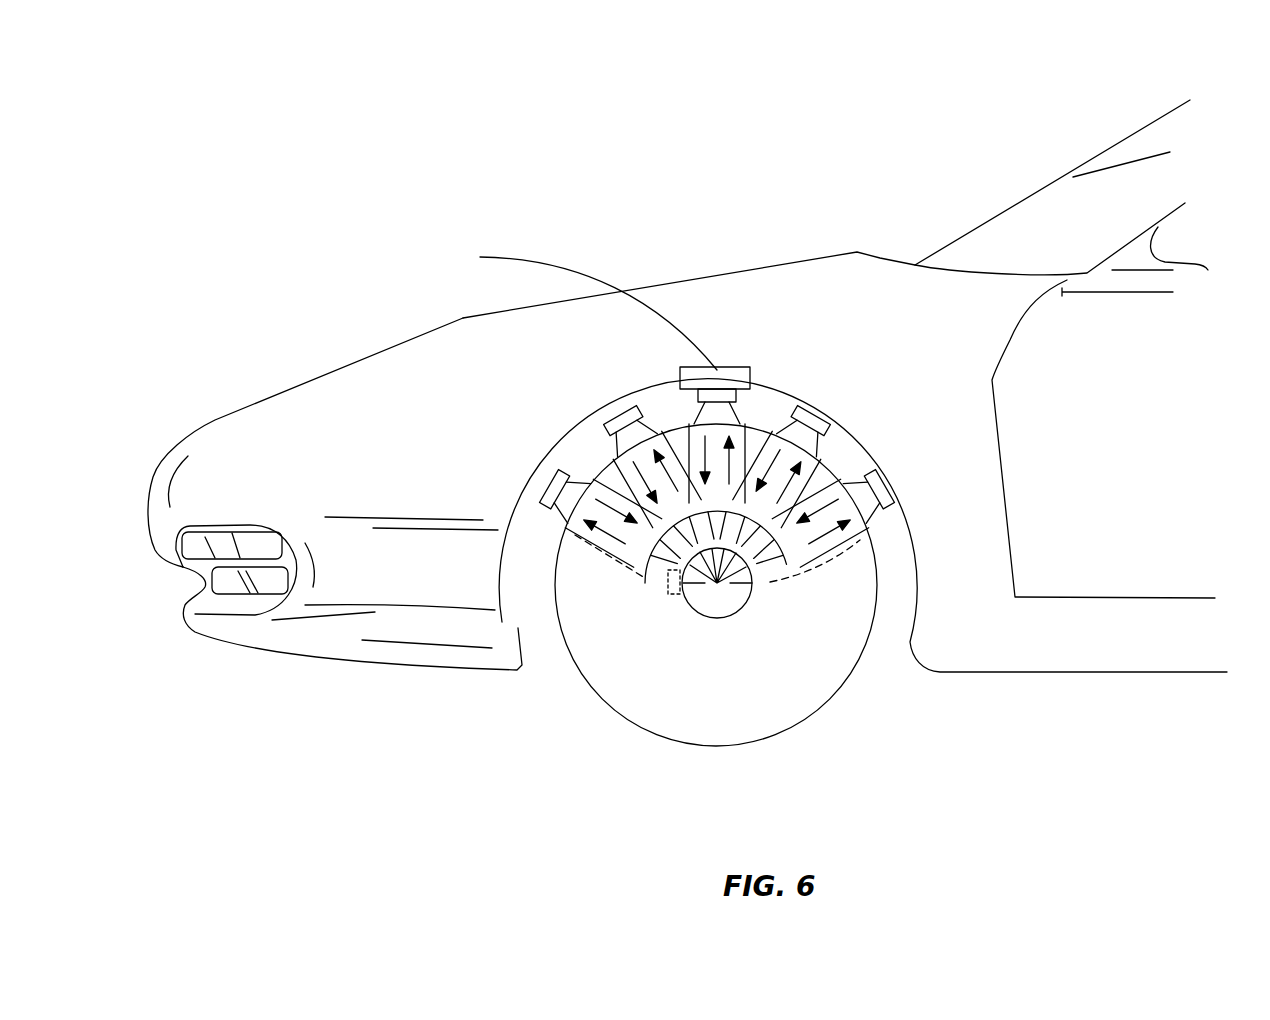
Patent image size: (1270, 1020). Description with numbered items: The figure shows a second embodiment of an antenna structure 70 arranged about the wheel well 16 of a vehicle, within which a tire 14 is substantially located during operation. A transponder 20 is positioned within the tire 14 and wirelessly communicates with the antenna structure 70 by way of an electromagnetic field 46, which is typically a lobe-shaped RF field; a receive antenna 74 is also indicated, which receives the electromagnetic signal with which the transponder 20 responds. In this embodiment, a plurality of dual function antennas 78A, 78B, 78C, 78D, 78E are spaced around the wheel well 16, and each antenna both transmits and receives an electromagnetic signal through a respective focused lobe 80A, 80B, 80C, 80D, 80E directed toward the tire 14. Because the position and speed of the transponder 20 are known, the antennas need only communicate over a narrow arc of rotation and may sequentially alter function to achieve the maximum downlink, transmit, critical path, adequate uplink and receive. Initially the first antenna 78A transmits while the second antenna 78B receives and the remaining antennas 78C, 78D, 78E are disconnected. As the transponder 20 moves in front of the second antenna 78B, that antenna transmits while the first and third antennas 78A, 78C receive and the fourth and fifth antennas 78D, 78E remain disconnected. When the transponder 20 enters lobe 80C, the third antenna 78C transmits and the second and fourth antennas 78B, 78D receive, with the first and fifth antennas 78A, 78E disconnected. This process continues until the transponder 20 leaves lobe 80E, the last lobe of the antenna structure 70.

The tire 14 is at (798, 732).
The wheel well 16 is at (866, 455).
The transponder 20 is at (675, 597).
The electromagnetic field 46 is at (797, 603).
The antenna structure 70 is at (759, 335).
The receive antenna 74 is at (584, 306).
The first antenna 78A is at (550, 497).
The second antenna 78B is at (620, 410).
The third antenna 78C is at (733, 392).
The fourth antenna 78D is at (803, 410).
The fifth antenna 78E is at (883, 500).
The focused lobe 80A is at (587, 535).
The focused lobe 80B is at (624, 461).
The focused lobe 80C is at (690, 428).
The focused lobe 80D is at (810, 465).
The focused lobe 80E is at (852, 545).